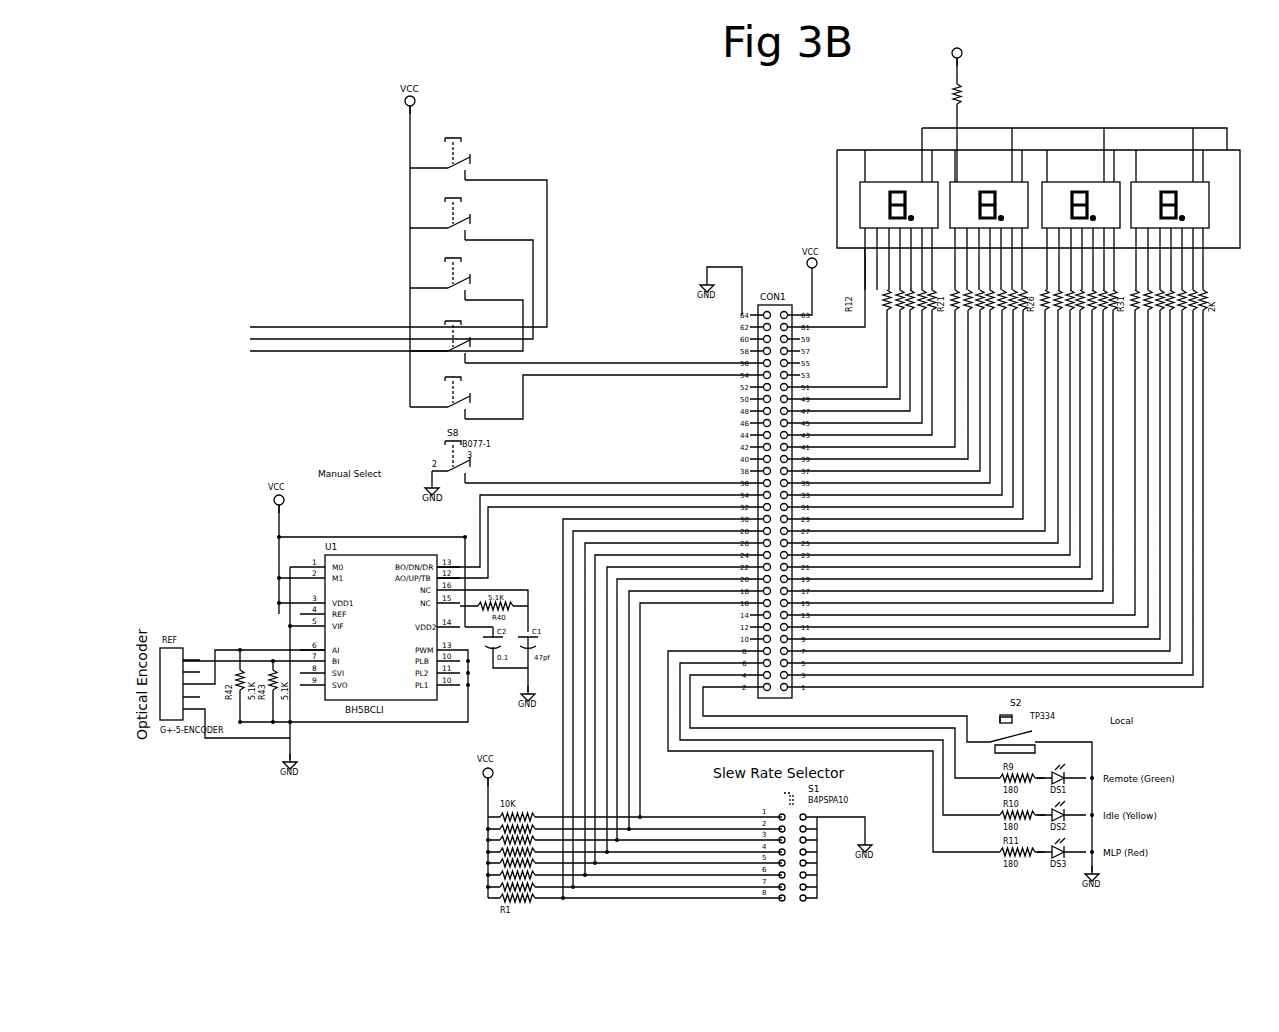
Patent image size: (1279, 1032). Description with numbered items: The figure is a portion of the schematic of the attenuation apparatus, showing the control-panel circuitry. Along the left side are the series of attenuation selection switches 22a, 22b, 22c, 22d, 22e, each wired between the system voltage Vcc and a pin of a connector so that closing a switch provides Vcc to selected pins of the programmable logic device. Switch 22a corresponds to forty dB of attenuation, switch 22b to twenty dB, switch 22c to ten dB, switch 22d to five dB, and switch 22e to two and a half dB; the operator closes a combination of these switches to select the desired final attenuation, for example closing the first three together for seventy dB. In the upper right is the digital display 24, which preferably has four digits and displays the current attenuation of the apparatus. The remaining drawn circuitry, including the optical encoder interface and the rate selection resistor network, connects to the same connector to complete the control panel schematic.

The attenuation selection switch 22a is at (410, 168).
The attenuation selection switch 22b is at (410, 228).
The attenuation selection switch 22c is at (410, 288).
The attenuation selection switch 22d is at (410, 351).
The attenuation selection switch 22e is at (410, 407).
The digital display 24 is at (836, 183).